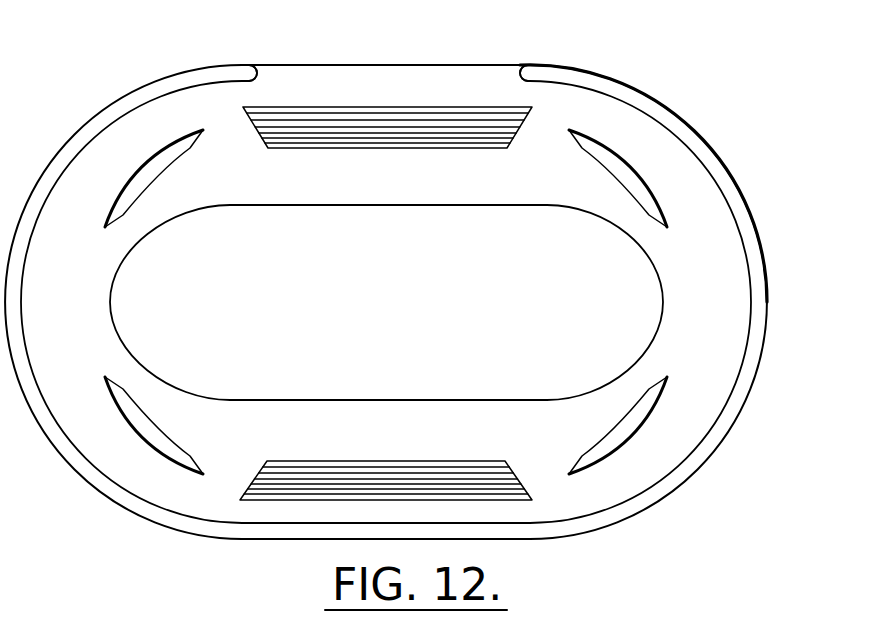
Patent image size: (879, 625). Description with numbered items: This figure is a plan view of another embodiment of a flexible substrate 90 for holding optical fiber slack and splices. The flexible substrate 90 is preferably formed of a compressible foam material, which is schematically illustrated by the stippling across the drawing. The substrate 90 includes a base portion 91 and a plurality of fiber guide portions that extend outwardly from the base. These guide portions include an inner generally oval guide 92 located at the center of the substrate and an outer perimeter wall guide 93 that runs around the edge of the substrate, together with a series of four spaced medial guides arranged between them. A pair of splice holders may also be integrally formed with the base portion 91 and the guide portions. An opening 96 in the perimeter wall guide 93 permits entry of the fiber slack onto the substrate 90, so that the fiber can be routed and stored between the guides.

The flexible substrate 90 is at (682, 93).
The base portion 91 is at (710, 238).
The inner generally oval guide 92 is at (403, 317).
The outer perimeter wall guide 93 is at (758, 292).
The opening 96 is at (308, 80).